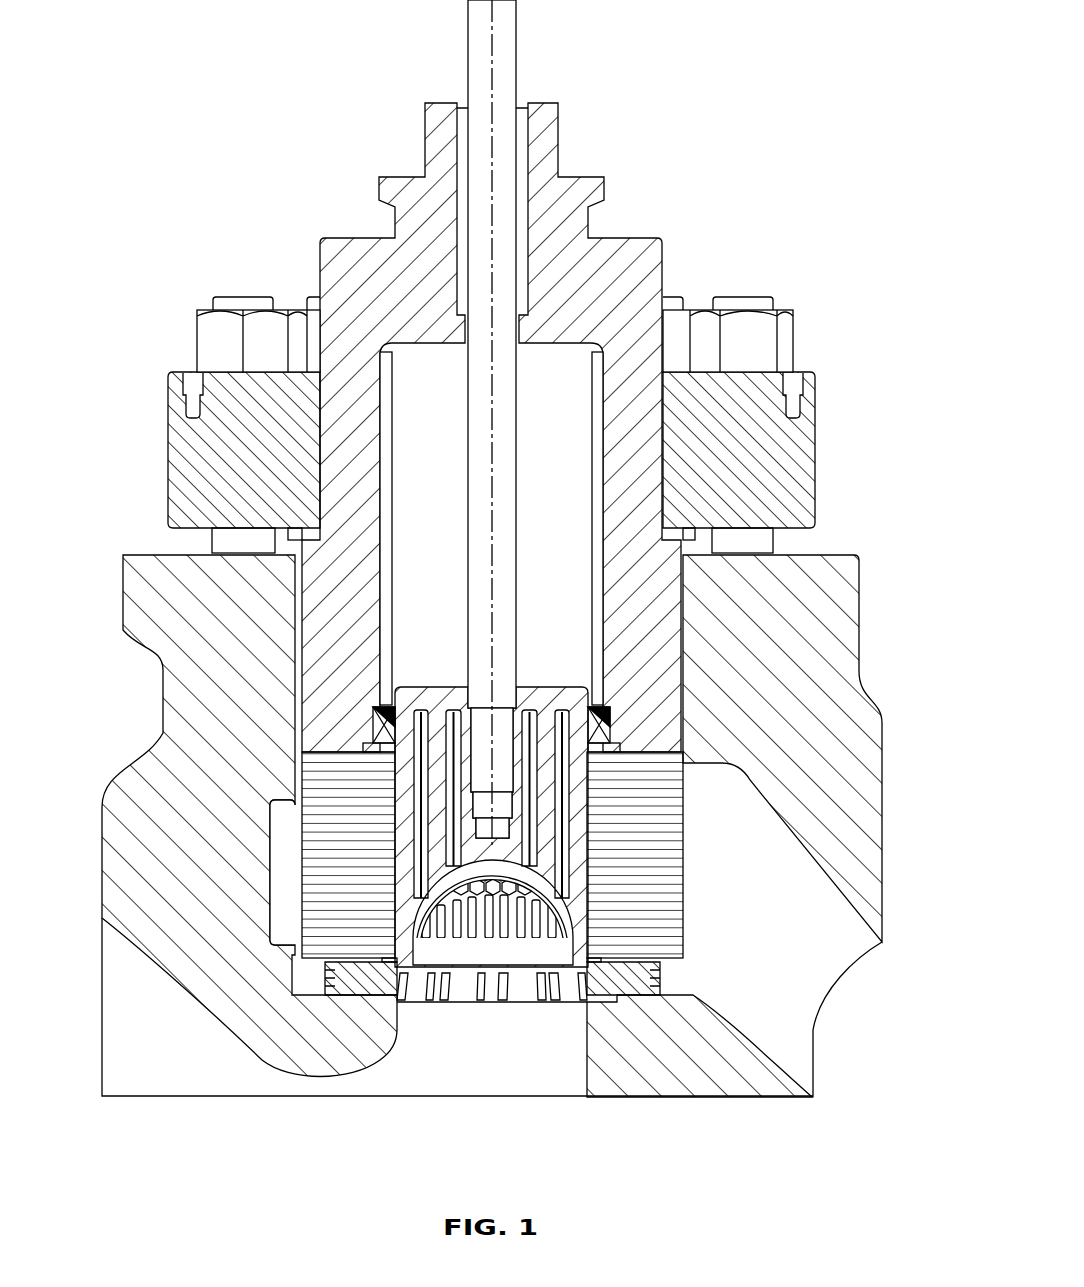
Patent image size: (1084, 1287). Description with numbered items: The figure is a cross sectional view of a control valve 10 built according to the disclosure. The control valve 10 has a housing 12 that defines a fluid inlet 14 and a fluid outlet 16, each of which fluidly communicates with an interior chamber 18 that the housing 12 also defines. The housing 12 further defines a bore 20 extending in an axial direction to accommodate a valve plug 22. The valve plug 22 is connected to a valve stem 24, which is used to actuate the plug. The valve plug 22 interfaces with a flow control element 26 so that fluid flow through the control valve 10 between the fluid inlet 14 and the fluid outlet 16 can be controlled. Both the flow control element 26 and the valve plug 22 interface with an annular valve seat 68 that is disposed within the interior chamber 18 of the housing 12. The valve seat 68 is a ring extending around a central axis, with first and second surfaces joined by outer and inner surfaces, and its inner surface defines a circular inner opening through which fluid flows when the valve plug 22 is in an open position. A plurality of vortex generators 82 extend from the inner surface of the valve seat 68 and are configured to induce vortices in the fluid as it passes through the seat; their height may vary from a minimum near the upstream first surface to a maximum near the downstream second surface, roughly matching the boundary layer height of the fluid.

The control valve 10 is at (222, 93).
The housing 12 is at (873, 598).
The fluid inlet 14 is at (797, 972).
The fluid outlet 16 is at (446, 1063).
The interior chamber 18 is at (287, 857).
The bore 20 is at (438, 467).
The valve plug 22 is at (551, 684).
The valve stem 24 is at (512, 488).
The flow control element 26 is at (692, 853).
The annular valve seat 68 is at (672, 980).
The vortex generators 82 is at (500, 1003).